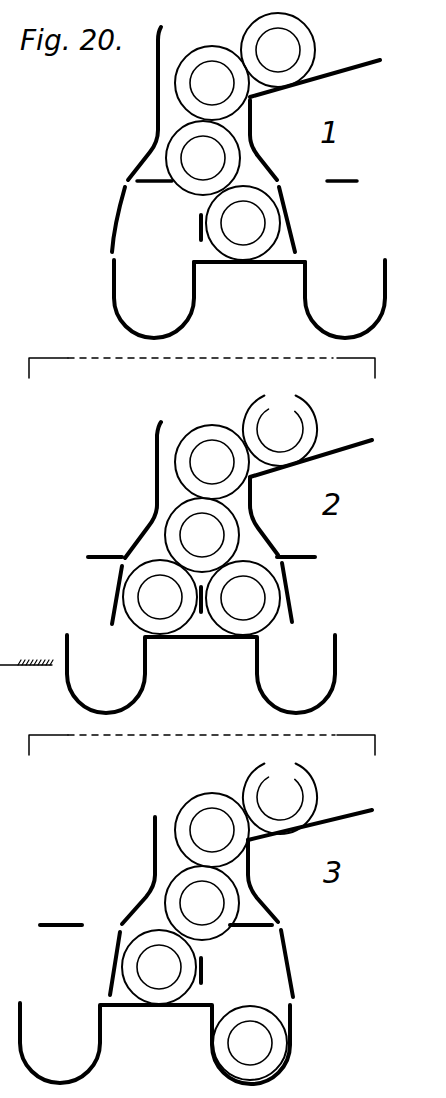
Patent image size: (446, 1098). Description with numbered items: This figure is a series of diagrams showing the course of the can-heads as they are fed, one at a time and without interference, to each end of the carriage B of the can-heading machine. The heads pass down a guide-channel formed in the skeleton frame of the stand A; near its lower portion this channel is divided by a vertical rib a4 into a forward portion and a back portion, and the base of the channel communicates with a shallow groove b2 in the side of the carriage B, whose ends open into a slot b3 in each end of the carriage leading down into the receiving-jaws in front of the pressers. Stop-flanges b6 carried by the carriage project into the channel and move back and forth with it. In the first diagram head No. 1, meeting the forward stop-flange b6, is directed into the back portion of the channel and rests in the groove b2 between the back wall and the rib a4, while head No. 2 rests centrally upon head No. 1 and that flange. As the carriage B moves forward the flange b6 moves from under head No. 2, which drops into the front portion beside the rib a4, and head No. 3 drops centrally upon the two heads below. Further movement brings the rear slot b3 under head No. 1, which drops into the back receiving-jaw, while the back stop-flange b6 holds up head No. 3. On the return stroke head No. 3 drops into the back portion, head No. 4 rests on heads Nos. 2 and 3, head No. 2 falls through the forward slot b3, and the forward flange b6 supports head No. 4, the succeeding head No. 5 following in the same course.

The head No. 1 is at (246, 633).
The head No. 2 is at (181, 562).
The head No. 3 is at (207, 493).
The head No. 4 is at (245, 440).
The head No. 5 is at (280, 615).
The vertical rib a4 is at (199, 232).
The shallow groove b2 is at (301, 262).
The slot b3 is at (249, 294).
The stop-flange b6 is at (149, 183).
The carriage B is at (249, 284).
The stand A is at (357, 371).